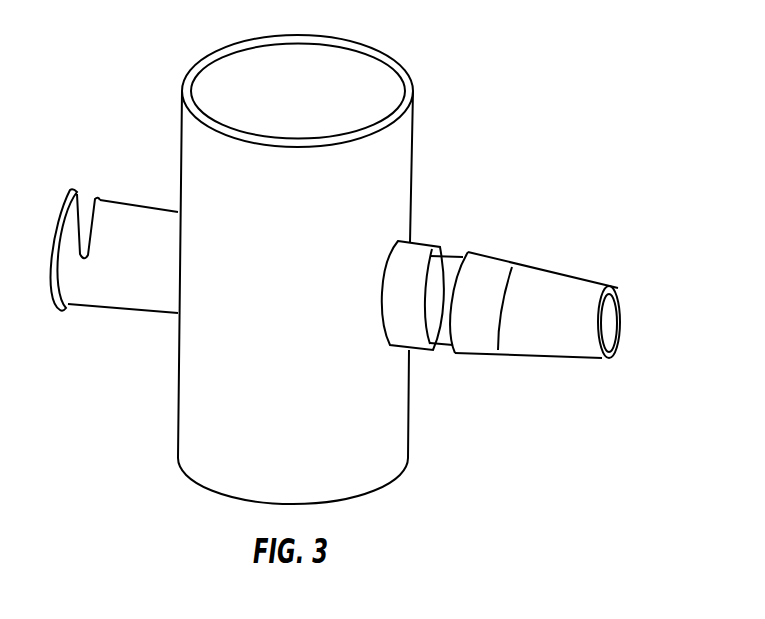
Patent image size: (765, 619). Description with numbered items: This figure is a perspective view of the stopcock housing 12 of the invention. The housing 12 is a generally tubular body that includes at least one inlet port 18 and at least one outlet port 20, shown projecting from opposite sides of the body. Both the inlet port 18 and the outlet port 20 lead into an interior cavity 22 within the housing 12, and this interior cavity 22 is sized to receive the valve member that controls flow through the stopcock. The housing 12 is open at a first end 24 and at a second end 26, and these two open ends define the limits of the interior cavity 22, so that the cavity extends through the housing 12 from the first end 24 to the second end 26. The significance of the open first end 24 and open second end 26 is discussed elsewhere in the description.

The housing 12 is at (152, 56).
The inlet port 18 is at (153, 303).
The outlet port 20 is at (555, 283).
The interior cavity 22 is at (358, 87).
The first end 24 is at (412, 85).
The second end 26 is at (387, 483).